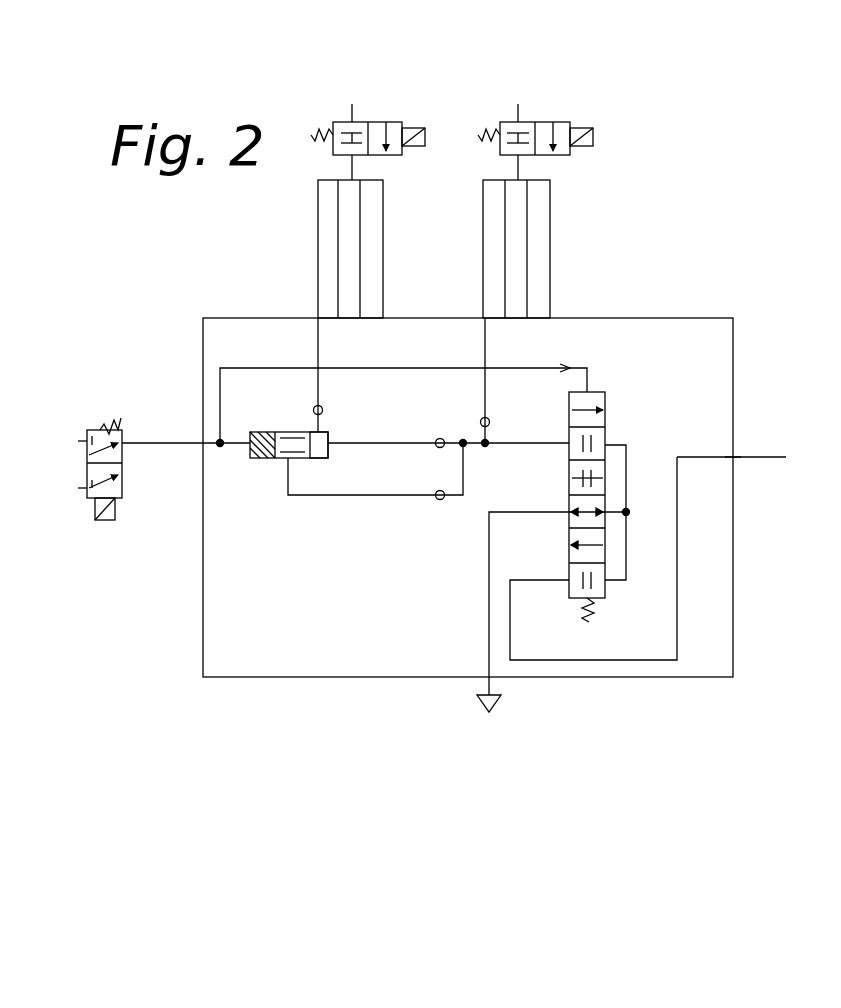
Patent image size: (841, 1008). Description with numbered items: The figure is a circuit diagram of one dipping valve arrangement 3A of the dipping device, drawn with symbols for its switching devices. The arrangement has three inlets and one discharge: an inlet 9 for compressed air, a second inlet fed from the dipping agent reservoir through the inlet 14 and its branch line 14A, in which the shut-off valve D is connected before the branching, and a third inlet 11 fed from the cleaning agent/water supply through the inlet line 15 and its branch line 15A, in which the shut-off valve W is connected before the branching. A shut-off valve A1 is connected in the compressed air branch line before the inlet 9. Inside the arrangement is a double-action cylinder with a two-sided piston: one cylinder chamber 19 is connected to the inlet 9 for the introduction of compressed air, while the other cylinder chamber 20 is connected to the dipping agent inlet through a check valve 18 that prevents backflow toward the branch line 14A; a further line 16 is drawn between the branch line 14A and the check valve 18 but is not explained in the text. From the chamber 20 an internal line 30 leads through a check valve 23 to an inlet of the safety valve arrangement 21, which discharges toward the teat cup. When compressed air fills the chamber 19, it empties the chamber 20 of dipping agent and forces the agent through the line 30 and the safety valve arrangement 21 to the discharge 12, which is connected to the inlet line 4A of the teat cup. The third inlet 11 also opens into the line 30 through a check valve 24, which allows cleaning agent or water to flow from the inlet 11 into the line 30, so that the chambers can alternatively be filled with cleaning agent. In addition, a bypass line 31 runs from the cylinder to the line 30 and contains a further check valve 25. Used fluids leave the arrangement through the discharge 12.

The dipping valve arrangement 3A is at (736, 316).
The inlet 14 is at (352, 121).
The shut-off valve D is at (400, 122).
The inlet line 15 is at (518, 121).
The shut-off valve W is at (568, 122).
The branch line 14A is at (318, 249).
The branch line 15A is at (483, 249).
The supply line 16 is at (317, 317).
The third inlet 11 is at (484, 317).
The shut-off valve A1 is at (116, 463).
The inlet 9 is at (218, 445).
The internal line 30 is at (394, 441).
The cylinder chamber 19 is at (259, 432).
The cylinder chamber 20 is at (330, 439).
The check valve 18 is at (323, 407).
The check valve 23 is at (440, 438).
The check valve 24 is at (489, 420).
The check valve 25 is at (440, 500).
The bypass line 31 is at (362, 497).
The safety valve arrangement 21 is at (608, 394).
The inlet line 4A is at (767, 456).
The discharge 12 is at (737, 463).